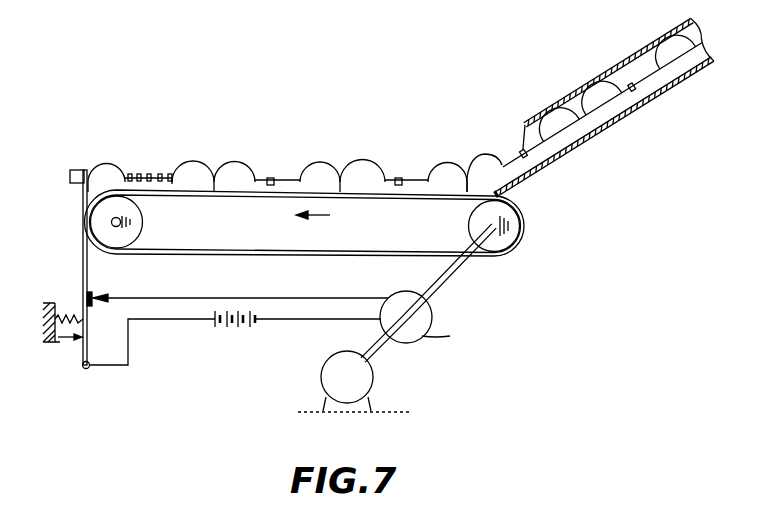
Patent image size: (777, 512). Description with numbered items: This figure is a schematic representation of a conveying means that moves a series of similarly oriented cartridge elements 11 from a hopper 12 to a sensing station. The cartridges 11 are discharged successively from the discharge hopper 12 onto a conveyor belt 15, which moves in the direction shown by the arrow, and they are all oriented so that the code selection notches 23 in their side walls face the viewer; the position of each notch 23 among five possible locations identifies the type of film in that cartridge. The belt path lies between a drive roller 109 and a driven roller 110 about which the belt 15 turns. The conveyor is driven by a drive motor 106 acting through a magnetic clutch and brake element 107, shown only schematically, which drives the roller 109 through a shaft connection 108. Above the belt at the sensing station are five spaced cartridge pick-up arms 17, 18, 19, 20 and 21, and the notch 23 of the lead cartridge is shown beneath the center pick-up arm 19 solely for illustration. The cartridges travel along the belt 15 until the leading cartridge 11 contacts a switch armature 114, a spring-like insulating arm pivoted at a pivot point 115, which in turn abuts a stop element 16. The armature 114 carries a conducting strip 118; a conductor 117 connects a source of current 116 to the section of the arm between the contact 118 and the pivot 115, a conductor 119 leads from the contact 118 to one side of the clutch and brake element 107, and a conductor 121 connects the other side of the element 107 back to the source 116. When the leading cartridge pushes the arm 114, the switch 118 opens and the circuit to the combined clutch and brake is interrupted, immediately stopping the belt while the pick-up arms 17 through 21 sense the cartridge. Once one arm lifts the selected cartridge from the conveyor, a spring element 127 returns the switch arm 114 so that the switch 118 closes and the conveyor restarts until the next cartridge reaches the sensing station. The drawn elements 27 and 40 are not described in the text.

The cartridge elements 11 is at (202, 190).
The hopper 12 is at (608, 80).
The conveyor belt 15 is at (510, 199).
The stop element 16 is at (70, 176).
The cartridge pick-up arm 17 is at (130, 173).
The cartridge pick-up arm 18 is at (139, 173).
The cartridge pick-up arm 19 is at (160, 173).
The cartridge pick-up arm 20 is at (170, 173).
The cartridge pick-up arm 21 is at (178, 176).
The code selection notch 23 is at (149, 181).
The gate 27 is at (522, 148).
The pocket floor 40 is at (281, 180).
The drive motor 106 is at (322, 378).
The magnetic clutch and brake element 107 is at (432, 315).
The shaft connection 108 is at (457, 268).
The drive roller 109 is at (514, 220).
The driven roller 110 is at (140, 230).
The switch armature 114 is at (83, 238).
The pivot point 115 is at (87, 370).
The source of current 116 is at (234, 330).
The conductor 117 is at (170, 320).
The conducting strip 118 is at (95, 294).
The conductor 119 is at (298, 298).
The conductor 121 is at (313, 320).
The spring element 127 is at (70, 312).